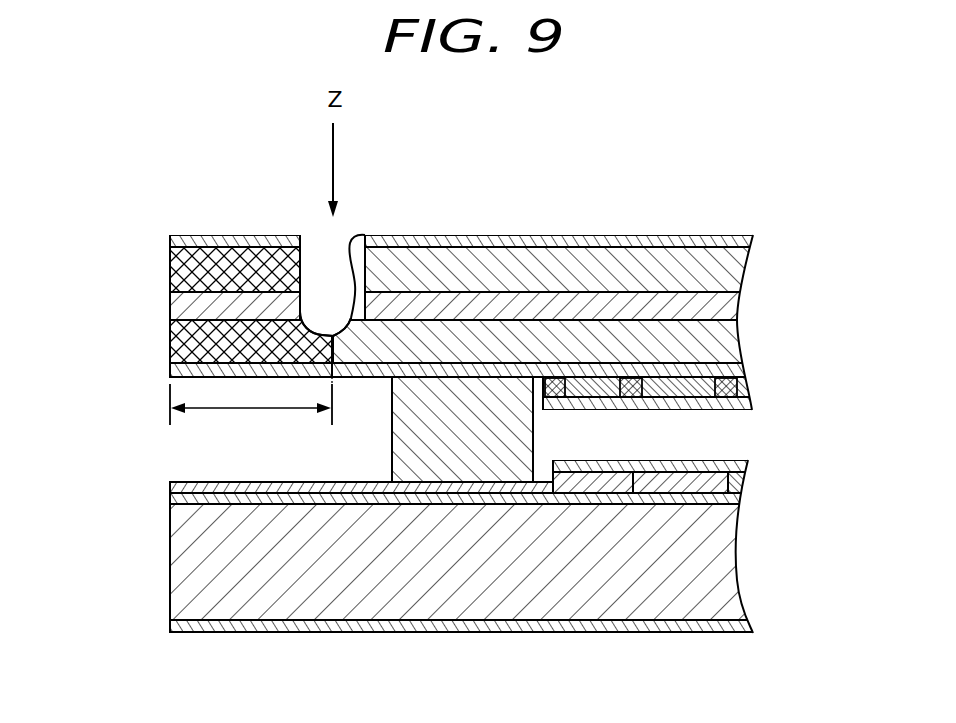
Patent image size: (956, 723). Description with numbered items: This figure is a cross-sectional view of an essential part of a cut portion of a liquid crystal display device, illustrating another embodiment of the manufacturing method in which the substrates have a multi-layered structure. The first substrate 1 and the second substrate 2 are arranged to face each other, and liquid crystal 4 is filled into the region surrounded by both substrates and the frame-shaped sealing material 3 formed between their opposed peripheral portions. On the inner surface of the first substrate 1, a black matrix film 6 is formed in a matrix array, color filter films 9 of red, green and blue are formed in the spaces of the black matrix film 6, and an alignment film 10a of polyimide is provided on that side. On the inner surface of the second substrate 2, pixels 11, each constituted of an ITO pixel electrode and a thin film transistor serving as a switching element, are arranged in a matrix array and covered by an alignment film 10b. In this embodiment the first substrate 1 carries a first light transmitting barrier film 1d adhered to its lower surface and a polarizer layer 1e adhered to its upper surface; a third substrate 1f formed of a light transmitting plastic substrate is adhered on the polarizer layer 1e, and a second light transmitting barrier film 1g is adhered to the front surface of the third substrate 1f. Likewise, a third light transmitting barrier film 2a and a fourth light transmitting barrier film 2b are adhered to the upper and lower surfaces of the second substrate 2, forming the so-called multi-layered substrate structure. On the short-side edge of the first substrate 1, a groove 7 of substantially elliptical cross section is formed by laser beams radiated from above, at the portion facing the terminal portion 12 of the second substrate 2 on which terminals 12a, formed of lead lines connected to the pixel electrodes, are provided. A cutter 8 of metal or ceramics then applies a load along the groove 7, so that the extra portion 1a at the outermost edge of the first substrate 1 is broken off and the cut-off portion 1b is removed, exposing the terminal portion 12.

The first substrate 1 is at (468, 335).
The extra portion 1a is at (243, 410).
The cut-off portion 1b is at (172, 342).
The first light transmitting barrier film 1d is at (743, 352).
The polarizer layer 1e is at (675, 300).
The third substrate 1f is at (625, 255).
The second light transmitting barrier film 1g is at (755, 240).
The second substrate 2 is at (727, 575).
The third light transmitting barrier film 2a is at (170, 498).
The fourth light transmitting barrier film 2b is at (170, 626).
The sealing material 3 is at (478, 458).
The liquid crystal 4 is at (737, 437).
The black matrix film 6 is at (745, 388).
The groove 7 is at (322, 263).
The cutter 8 is at (333, 336).
The color filter films 9 is at (700, 368).
The alignment film 10a is at (747, 408).
The alignment film 10b is at (745, 468).
The pixels 11 is at (713, 487).
The terminal portion 12 is at (458, 513).
The terminals 12a is at (170, 488).